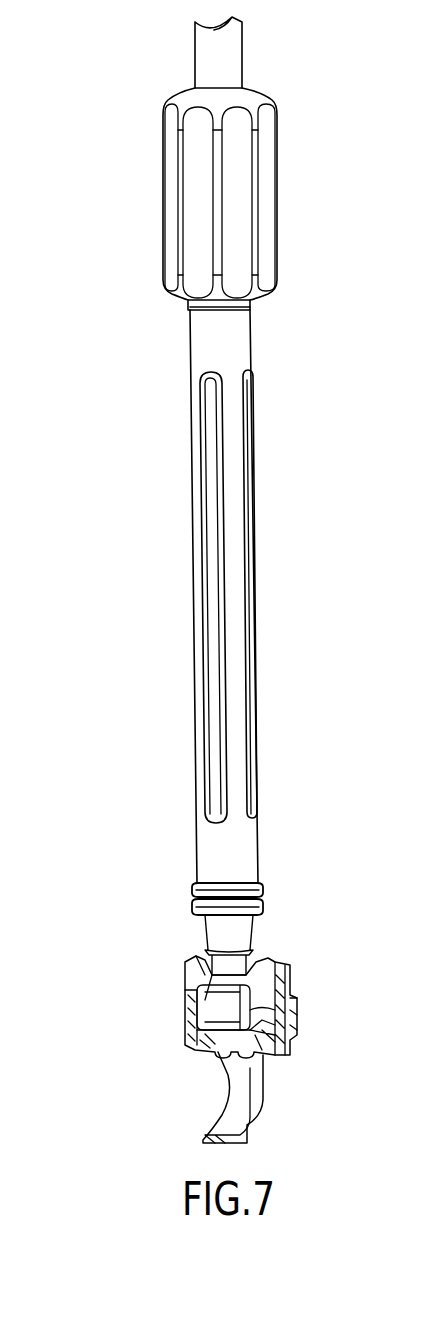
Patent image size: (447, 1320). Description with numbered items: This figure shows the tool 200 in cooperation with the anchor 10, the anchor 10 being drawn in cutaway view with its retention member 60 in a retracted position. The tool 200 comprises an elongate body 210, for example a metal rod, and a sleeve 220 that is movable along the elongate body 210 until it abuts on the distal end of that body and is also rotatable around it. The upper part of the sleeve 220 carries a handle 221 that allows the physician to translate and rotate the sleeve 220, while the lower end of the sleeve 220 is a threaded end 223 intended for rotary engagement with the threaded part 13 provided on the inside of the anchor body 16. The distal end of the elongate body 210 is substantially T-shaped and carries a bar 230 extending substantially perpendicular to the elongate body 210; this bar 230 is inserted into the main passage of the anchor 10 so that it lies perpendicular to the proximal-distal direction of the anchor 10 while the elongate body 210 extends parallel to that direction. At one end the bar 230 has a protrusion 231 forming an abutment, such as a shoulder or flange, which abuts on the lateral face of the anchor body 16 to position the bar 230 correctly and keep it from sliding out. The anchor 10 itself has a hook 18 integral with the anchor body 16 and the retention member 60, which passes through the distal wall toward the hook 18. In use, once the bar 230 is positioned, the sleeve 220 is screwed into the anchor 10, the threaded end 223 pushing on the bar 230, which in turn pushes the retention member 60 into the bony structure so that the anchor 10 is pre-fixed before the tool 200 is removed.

The tool 200 is at (97, 125).
The elongate body 210 is at (226, 50).
The handle 221 is at (268, 198).
The sleeve 220 is at (245, 690).
The threaded end 223 is at (263, 890).
The anchor 10 is at (176, 962).
The anchor body 16 is at (190, 1005).
The bar 230 is at (190, 1043).
The threaded part 13 is at (288, 993).
The protrusion 231 is at (290, 1005).
The retention member 60 is at (265, 1045).
The hook 18 is at (235, 1105).